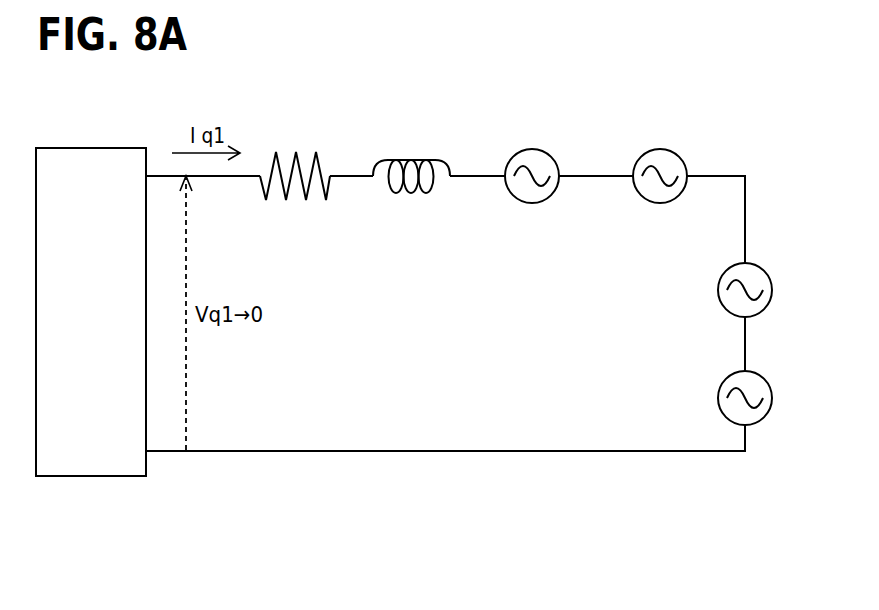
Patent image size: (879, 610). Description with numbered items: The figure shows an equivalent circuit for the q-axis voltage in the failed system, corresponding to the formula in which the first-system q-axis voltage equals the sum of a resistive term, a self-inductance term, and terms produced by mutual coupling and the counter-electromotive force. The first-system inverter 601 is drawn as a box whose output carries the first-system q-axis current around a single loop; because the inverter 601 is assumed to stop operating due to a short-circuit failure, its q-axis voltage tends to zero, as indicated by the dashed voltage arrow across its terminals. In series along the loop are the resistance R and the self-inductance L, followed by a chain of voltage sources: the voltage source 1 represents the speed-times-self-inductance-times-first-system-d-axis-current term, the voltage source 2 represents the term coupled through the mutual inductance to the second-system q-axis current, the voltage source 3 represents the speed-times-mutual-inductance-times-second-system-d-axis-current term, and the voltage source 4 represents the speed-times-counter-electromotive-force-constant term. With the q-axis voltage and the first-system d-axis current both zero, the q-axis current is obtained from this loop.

The first-system inverter 601 is at (90, 148).
The resistance R is at (295, 161).
The self-inductance L is at (411, 158).
The voltage source ω×L×Id1 1 is at (573, 102).
The voltage source Ms×Iq2 2 is at (658, 149).
The voltage source ω×M×Id2 3 is at (718, 289).
The voltage source ω×Ke 4 is at (718, 399).